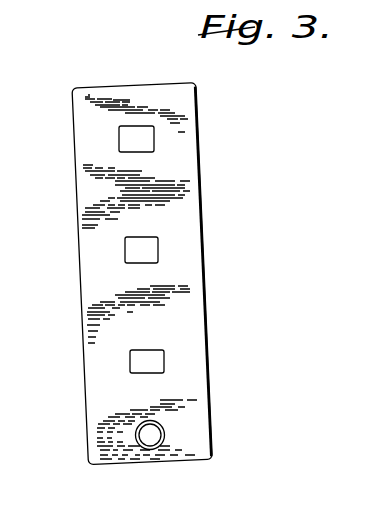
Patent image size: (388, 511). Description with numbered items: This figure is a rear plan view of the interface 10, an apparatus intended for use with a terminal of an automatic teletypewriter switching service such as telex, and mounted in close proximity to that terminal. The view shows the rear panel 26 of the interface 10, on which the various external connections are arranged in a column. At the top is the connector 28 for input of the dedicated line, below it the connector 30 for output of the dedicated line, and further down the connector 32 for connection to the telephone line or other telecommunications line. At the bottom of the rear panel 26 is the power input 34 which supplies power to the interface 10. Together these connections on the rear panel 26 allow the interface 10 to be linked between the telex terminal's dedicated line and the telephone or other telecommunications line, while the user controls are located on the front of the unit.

The interface 10 is at (90, 85).
The rear panel 26 is at (90, 199).
The connector 28 is at (119, 133).
The connector 30 is at (125, 262).
The connector 32 is at (130, 362).
The power input 34 is at (136, 433).